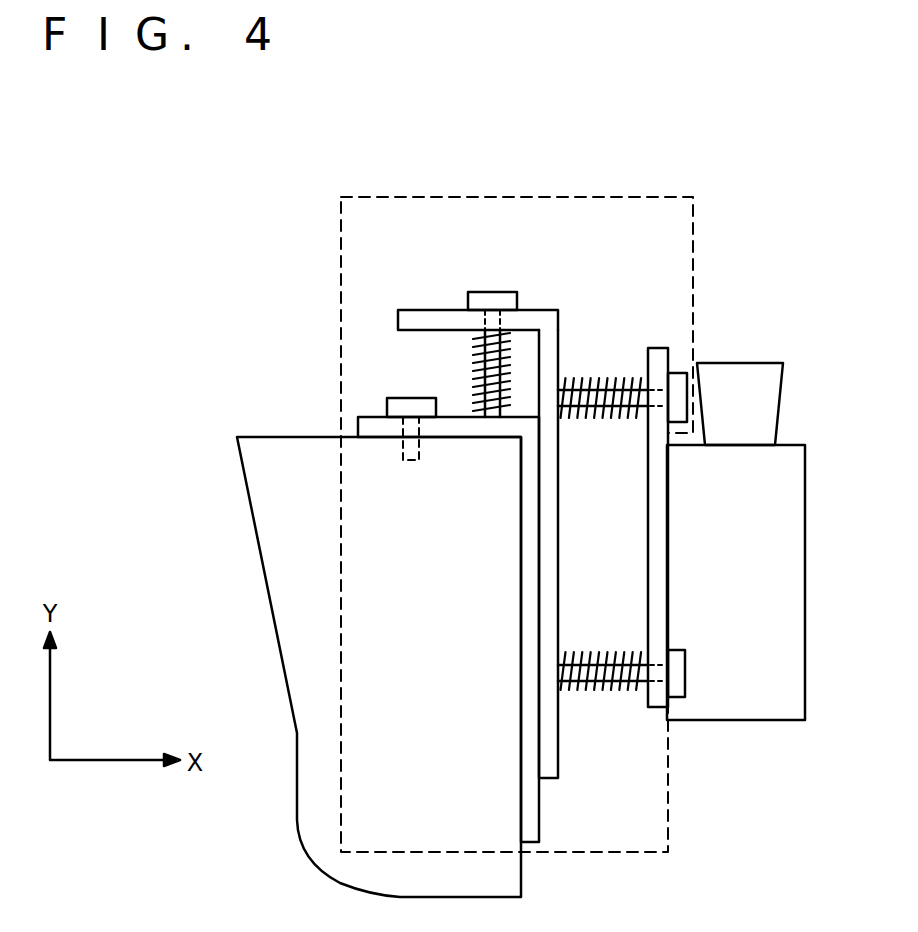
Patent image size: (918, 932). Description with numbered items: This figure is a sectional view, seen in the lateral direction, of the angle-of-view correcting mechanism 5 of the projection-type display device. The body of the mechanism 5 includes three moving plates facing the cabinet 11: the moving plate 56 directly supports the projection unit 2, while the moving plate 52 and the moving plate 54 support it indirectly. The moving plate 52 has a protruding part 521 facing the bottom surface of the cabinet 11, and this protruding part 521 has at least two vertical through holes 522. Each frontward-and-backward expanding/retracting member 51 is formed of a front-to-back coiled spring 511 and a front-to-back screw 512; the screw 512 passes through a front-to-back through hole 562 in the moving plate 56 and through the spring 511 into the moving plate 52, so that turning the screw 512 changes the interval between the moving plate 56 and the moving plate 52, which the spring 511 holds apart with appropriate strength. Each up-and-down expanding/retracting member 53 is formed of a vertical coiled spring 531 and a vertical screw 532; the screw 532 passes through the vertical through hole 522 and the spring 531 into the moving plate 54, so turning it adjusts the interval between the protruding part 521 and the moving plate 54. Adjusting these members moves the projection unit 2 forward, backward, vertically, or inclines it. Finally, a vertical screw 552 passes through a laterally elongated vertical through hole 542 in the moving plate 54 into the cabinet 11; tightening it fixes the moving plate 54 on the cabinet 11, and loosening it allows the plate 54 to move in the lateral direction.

The projection unit 2 is at (782, 545).
The angle-of-view correcting mechanism 5 is at (695, 310).
The cabinet 11 is at (295, 585).
The frontward-and-backward expanding/retracting member 51 is at (695, 593).
The moving plate 52 is at (530, 509).
The up-and-down expanding/retracting member 53 is at (337, 329).
The moving plate 54 is at (528, 800).
The moving plate 56 is at (657, 347).
The front-to-back coiled spring 511 is at (592, 690).
The front-to-back screw 512 is at (672, 685).
The protruding part 521 is at (400, 268).
The vertical through hole 522 is at (512, 322).
The vertical coiled spring 531 is at (477, 345).
The vertical screw 532 is at (480, 298).
The vertical through hole 542 is at (392, 417).
The vertical screw 552 is at (405, 405).
The front-to-back through hole 562 is at (656, 660).